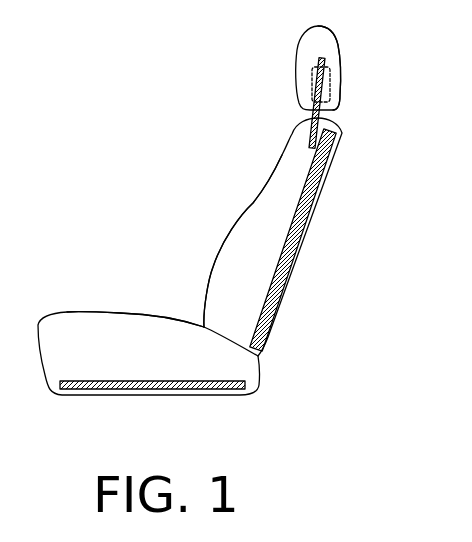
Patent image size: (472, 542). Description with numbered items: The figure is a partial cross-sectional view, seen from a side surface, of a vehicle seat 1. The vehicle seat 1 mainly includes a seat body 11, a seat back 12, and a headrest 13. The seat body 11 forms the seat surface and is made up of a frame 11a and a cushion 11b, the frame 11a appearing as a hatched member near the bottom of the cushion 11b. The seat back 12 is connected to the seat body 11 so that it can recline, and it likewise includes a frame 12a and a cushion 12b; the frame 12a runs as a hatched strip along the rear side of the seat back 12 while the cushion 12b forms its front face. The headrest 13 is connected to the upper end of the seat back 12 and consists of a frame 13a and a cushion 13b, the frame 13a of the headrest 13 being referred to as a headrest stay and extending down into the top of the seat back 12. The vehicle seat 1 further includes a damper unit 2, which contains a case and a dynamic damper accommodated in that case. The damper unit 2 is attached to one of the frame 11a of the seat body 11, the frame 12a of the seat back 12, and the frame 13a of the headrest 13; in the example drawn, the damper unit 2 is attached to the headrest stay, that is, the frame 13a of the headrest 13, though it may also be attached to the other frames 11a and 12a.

The vehicle seat 1 is at (149, 163).
The damper unit 2 is at (297, 72).
The seat body 11 is at (66, 311).
The frame 11a is at (145, 391).
The cushion 11b is at (137, 315).
The seat back 12 is at (328, 170).
The frame 12a is at (307, 229).
The cushion 12b is at (253, 203).
The headrest 13 is at (333, 33).
The frame 13a is at (331, 72).
The cushion 13b is at (337, 53).